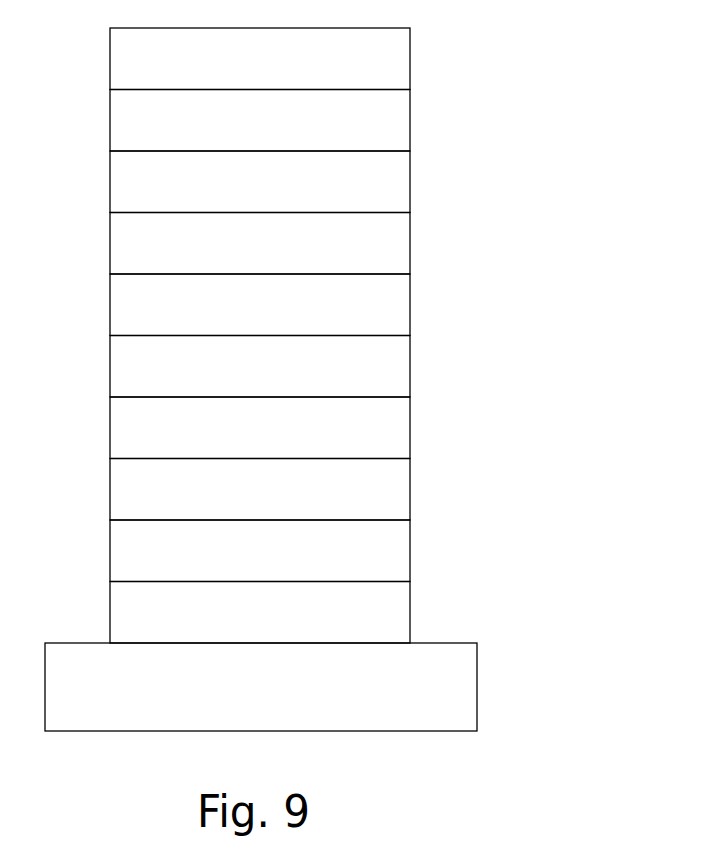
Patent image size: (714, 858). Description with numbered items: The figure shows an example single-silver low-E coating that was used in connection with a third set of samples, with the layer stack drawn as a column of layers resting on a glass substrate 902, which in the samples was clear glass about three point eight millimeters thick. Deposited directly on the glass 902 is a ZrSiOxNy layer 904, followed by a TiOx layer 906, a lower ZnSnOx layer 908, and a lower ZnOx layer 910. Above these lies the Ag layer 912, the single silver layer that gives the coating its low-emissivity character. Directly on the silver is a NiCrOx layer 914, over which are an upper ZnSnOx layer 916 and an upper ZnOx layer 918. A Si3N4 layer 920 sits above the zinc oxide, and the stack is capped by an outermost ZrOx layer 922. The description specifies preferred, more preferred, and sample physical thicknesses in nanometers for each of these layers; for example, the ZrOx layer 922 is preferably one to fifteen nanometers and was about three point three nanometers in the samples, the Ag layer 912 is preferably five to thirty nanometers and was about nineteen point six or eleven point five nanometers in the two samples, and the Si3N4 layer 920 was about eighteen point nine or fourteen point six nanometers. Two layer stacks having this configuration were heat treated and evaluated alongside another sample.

The glass substrate 902 is at (462, 685).
The ZrSiOxNy layer 904 is at (405, 623).
The TiOx layer 906 is at (405, 560).
The ZnSnOx layer 908 is at (405, 498).
The ZnOx layer 910 is at (405, 435).
The Ag layer 912 is at (405, 372).
The NiCrOx layer 914 is at (405, 310).
The ZnSnOx layer 916 is at (405, 248).
The ZnOx layer 918 is at (405, 185).
The Si3N4 layer 920 is at (405, 122).
The ZrOx layer 922 is at (405, 60).